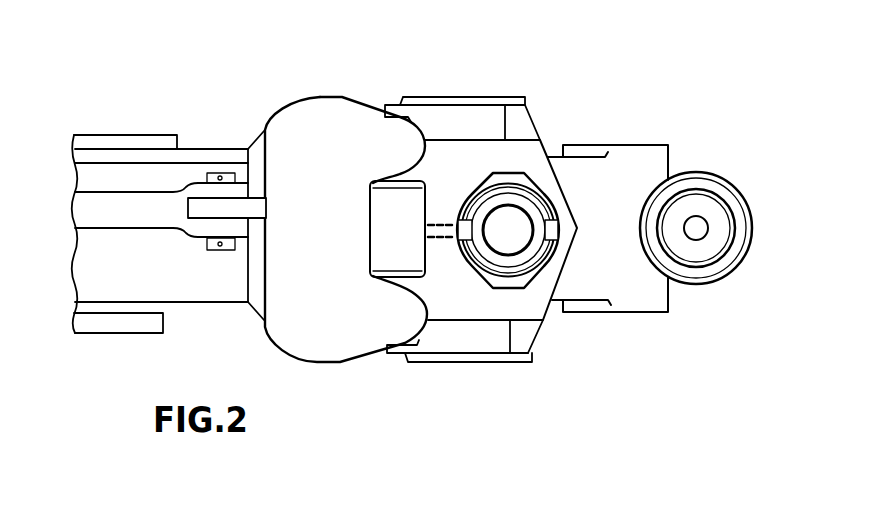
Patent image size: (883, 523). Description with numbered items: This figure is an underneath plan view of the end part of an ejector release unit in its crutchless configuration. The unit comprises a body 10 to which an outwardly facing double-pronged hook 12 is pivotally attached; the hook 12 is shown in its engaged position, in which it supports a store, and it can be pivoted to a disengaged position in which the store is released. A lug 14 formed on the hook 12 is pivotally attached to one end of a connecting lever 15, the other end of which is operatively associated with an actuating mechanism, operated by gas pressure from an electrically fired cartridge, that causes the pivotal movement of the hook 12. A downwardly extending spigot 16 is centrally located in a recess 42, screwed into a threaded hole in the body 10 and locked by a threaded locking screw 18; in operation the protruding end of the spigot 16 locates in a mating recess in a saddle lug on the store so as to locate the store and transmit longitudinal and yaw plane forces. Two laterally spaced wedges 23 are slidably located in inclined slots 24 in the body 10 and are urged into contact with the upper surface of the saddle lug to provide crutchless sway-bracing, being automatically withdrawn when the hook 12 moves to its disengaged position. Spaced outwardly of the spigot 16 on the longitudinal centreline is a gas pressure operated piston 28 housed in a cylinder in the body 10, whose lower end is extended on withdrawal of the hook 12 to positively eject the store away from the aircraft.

The body 10 is at (470, 167).
The double-pronged hook 12 is at (307, 135).
The lug 14 is at (225, 209).
The connecting lever 15 is at (153, 213).
The spigot 16 is at (484, 252).
The threaded locking screw 18 is at (426, 232).
The wedges 23 is at (432, 123).
The inclined slots 24 is at (520, 123).
The piston 28 is at (735, 213).
The recess 42 is at (543, 191).